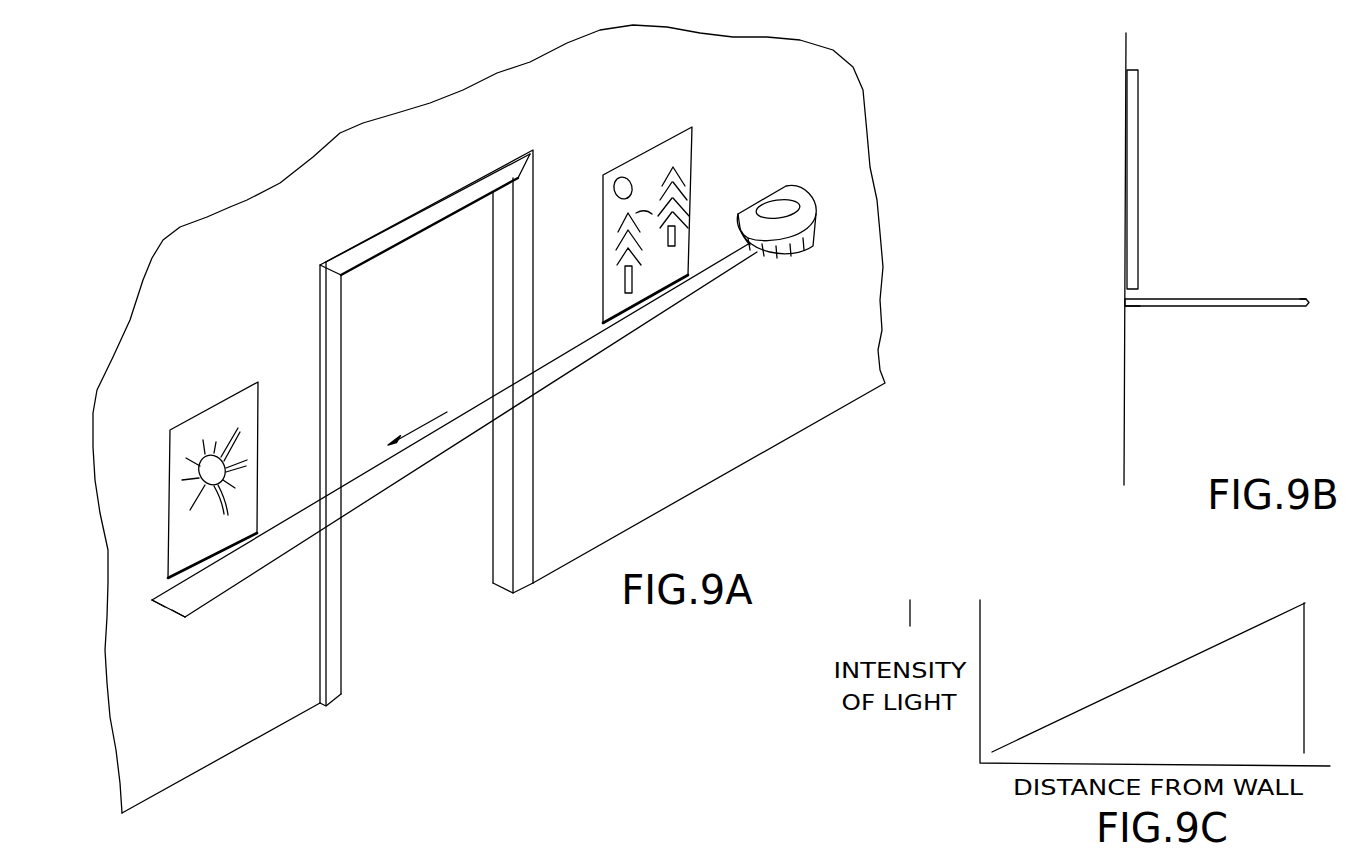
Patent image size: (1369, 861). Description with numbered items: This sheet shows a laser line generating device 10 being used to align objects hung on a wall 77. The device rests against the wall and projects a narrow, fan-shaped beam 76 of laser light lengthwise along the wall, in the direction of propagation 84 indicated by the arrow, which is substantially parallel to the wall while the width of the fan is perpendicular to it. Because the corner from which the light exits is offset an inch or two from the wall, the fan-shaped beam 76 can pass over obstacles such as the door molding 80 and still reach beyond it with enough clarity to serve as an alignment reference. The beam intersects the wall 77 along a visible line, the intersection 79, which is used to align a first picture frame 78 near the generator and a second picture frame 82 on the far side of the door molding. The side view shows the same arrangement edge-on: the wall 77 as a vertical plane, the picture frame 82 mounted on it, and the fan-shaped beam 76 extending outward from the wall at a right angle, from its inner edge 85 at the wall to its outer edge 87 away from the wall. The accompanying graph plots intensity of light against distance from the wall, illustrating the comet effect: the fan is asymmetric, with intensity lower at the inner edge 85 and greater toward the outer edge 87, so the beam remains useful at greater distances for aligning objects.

In FIG. 9A, the laser line generating device 10 is at (795, 197).
In FIG. 9A, the fan-shaped beam 76 is at (213, 577).
In FIG. 9B, the fan-shaped beam 76 is at (1235, 297).
In FIG. 9A, the wall 77 is at (698, 442).
In FIG. 9B, the wall 77 is at (1126, 398).
In FIG. 9A, the first picture frame 78 is at (647, 148).
In FIG. 9A, the intersection 79 is at (272, 531).
In FIG. 9A, the door molding 80 is at (500, 480).
In FIG. 9A, the picture frame 82 is at (217, 403).
In FIG. 9B, the picture frame 82 is at (1138, 274).
In FIG. 9A, the direction of propagation 84 is at (425, 423).
In FIG. 9A, the inner edge 85 is at (155, 604).
In FIG. 9B, the inner edge 85 is at (1138, 309).
In FIG. 9A, the outer edge 87 is at (179, 619).
In FIG. 9B, the outer edge 87 is at (1297, 311).